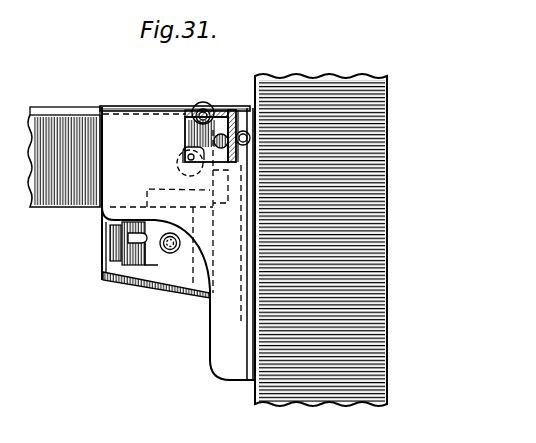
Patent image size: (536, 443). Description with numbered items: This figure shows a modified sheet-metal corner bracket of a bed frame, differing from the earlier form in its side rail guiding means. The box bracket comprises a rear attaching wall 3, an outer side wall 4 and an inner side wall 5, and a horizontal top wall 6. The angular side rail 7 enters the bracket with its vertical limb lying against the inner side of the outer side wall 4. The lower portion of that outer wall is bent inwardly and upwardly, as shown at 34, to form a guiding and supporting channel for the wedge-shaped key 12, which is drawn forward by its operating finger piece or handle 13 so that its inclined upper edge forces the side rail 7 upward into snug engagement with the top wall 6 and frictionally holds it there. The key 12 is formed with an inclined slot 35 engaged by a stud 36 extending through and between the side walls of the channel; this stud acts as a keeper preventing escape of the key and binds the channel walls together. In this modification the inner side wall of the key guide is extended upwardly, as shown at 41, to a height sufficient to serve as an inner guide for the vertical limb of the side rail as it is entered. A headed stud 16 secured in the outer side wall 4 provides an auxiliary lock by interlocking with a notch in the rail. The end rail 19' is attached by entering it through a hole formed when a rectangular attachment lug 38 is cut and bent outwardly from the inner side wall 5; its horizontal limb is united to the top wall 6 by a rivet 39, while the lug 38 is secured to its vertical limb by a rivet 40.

The rear attaching wall 3 is at (210, 346).
The outer side wall 4 is at (107, 247).
The inner side wall 5 is at (228, 305).
The horizontal top wall 6 is at (149, 106).
The side rail 7 is at (58, 107).
The wedge-shaped key 12 is at (143, 238).
The operating finger piece or handle 13 is at (118, 230).
The headed stud 16 is at (203, 170).
The end rail 19' is at (214, 91).
The inwardly bent lower portion of outer side wall 34 is at (155, 256).
The inclined slot 35 is at (142, 221).
The stud 36 is at (168, 254).
The attachment lug 38 is at (238, 110).
The rivet 39 is at (204, 103).
The rivet 40 is at (250, 138).
The upward extension of key guide inner side wall 41 is at (151, 188).